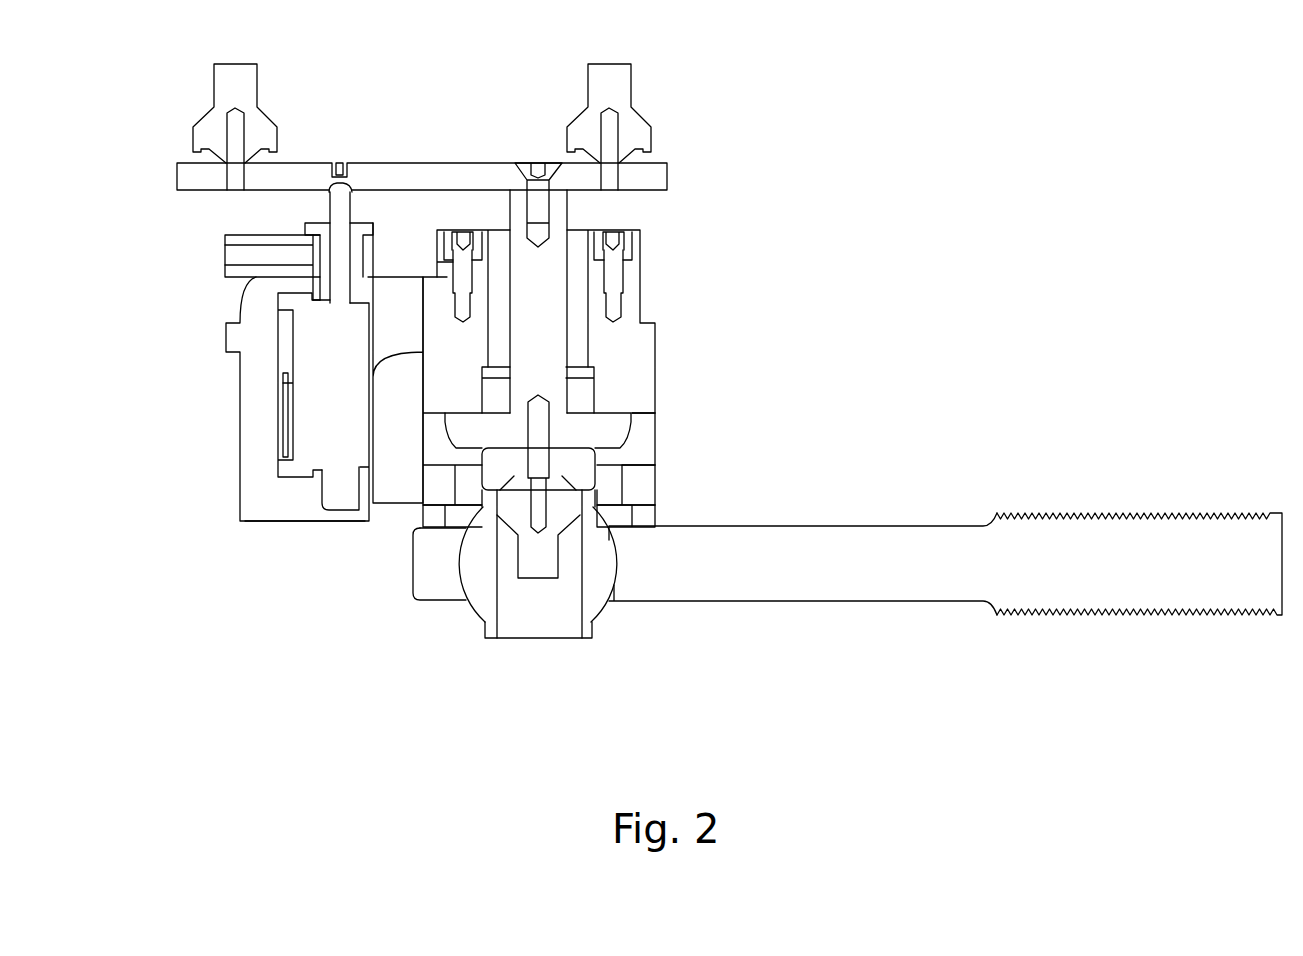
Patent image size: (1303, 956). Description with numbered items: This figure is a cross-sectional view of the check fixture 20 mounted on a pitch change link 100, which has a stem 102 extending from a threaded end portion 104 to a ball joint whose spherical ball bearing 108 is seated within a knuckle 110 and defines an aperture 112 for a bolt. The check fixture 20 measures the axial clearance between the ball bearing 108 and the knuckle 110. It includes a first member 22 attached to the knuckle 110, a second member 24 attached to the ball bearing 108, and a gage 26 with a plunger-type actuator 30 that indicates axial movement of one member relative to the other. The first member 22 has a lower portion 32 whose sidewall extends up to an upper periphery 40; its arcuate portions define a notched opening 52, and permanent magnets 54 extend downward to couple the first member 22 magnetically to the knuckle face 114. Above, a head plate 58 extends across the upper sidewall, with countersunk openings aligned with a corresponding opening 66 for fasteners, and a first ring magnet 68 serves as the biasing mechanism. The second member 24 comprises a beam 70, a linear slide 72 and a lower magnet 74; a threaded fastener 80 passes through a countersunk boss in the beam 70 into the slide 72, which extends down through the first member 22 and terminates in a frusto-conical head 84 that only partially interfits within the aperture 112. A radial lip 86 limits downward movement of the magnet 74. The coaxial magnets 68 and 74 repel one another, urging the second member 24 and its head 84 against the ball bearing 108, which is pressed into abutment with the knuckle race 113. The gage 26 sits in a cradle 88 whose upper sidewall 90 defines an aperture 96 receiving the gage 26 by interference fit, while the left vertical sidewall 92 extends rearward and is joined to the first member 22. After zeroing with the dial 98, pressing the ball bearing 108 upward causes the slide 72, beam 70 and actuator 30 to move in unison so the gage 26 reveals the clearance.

The check fixture 20 is at (806, 182).
The first member 22 is at (662, 353).
The second member 24 is at (560, 215).
The gage 26 is at (270, 404).
The gage actuator 30 is at (338, 207).
The lower portion 32 is at (655, 417).
The upper periphery 40 is at (650, 318).
The notched opening 52 is at (573, 442).
The permanent magnets 54 is at (620, 513).
The head plate 58 is at (637, 255).
The opening 66 is at (623, 273).
The first ring magnet 68 is at (582, 393).
The beam 70 is at (453, 172).
The linear slide 72 is at (551, 321).
The magnet 74 is at (582, 472).
The threaded fastener 80 is at (553, 163).
The frusto-conical head 84 is at (527, 562).
The radial lip 86 is at (490, 490).
The cradle 88 is at (247, 520).
The upper sidewall 90 is at (235, 272).
The left vertical sidewall 92 is at (296, 516).
The aperture 96 is at (318, 250).
The dial 98 is at (343, 495).
The pitch change link 100 is at (945, 569).
The stem 102 is at (837, 550).
The threaded end portion 104 is at (1105, 573).
The spherical ball bearing 108 is at (485, 603).
The knuckle 110 is at (423, 585).
The aperture 112 is at (583, 617).
The knuckle race 113 is at (613, 588).
The knuckle face 114 is at (420, 530).